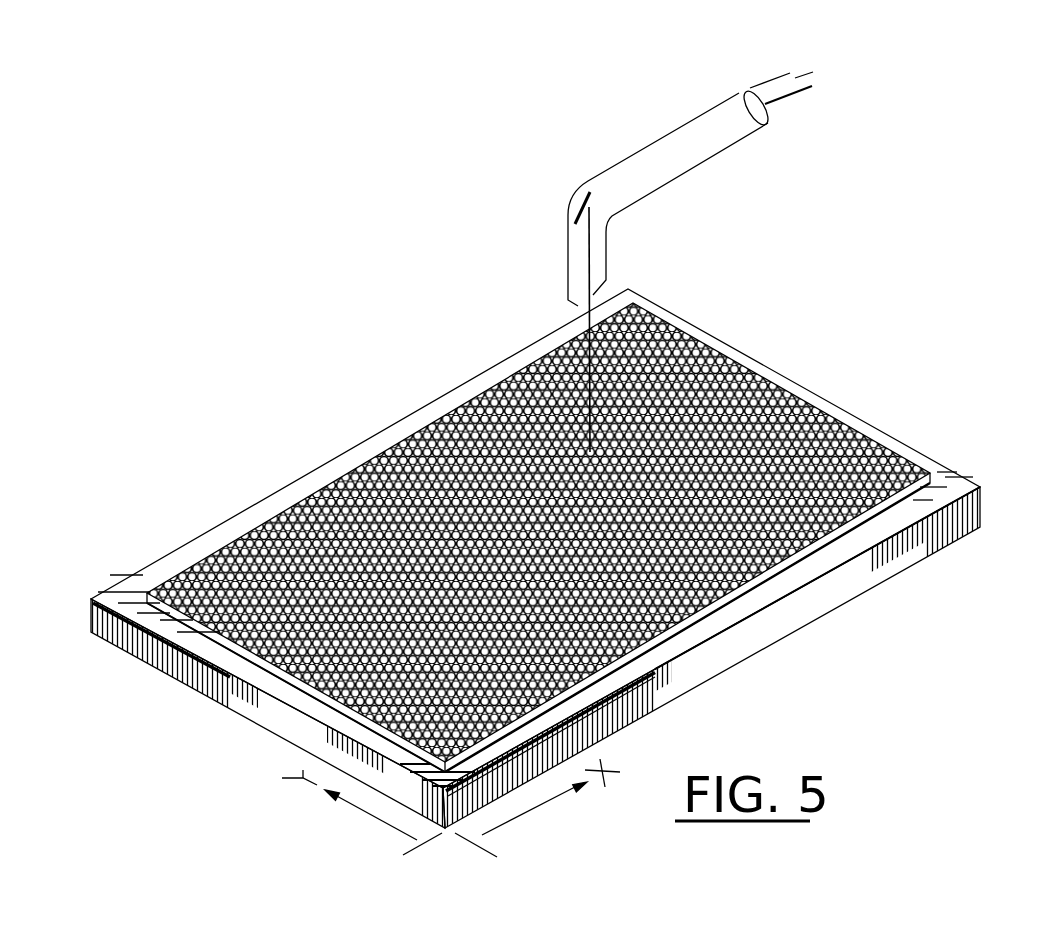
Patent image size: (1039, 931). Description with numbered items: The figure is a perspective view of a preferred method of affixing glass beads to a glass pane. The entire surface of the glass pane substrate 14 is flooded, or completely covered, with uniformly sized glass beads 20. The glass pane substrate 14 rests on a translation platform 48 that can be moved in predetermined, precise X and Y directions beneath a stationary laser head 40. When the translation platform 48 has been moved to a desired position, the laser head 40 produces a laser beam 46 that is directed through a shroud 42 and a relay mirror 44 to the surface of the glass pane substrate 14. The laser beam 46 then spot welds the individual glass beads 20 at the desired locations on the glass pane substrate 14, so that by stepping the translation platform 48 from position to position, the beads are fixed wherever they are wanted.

The glass pane substrate 14 is at (948, 473).
The glass beads 20 is at (757, 405).
The laser head 40 is at (767, 113).
The shroud 42 is at (660, 138).
The relay mirror 44 is at (583, 200).
The laser beam 46 is at (587, 316).
The translation platform 48 is at (927, 550).